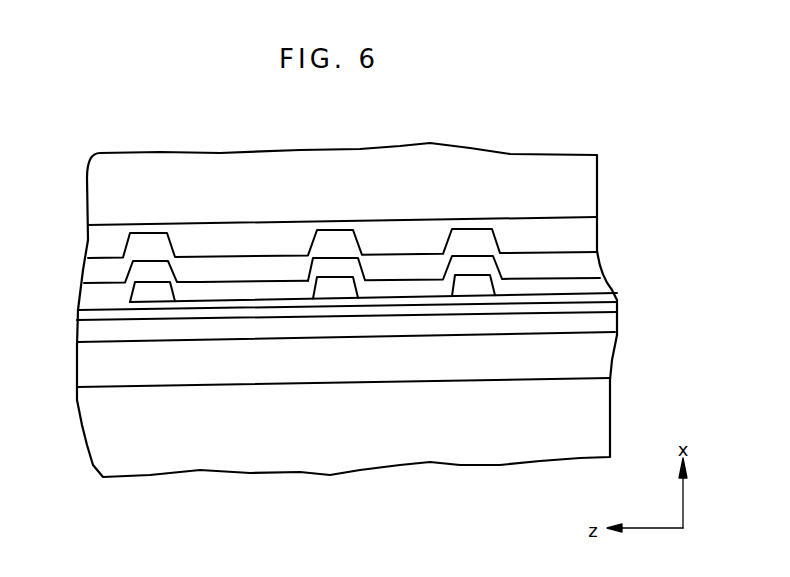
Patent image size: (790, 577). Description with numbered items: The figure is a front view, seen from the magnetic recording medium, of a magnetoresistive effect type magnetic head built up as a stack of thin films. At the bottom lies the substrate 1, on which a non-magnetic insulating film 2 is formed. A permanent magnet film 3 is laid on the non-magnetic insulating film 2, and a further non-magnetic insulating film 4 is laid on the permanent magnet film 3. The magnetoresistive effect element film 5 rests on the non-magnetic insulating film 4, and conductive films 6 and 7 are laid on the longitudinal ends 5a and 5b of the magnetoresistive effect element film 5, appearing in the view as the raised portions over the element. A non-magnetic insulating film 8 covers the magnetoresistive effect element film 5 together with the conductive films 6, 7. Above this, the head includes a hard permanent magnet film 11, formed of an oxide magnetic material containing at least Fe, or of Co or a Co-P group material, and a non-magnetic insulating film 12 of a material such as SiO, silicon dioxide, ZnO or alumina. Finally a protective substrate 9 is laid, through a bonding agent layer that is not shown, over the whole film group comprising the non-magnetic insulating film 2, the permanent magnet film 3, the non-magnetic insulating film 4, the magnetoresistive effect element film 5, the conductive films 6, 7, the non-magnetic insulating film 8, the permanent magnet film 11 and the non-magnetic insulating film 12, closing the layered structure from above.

The substrate 1 is at (453, 437).
The non-magnetic insulating film 2 is at (387, 370).
The permanent magnet film 3 is at (275, 332).
The non-magnetic insulating film 4 is at (488, 310).
The magnetoresistive effect element film 5 is at (218, 305).
The longitudinal end 5a is at (160, 308).
The longitudinal end 5b is at (344, 302).
The conductive film 6 is at (151, 285).
The conductive film 7 is at (334, 282).
The non-magnetic insulating film 8 is at (296, 285).
The protective substrate 9 is at (200, 177).
The hard permanent magnet film 11 is at (403, 263).
The non-magnetic insulating film 12 is at (435, 225).